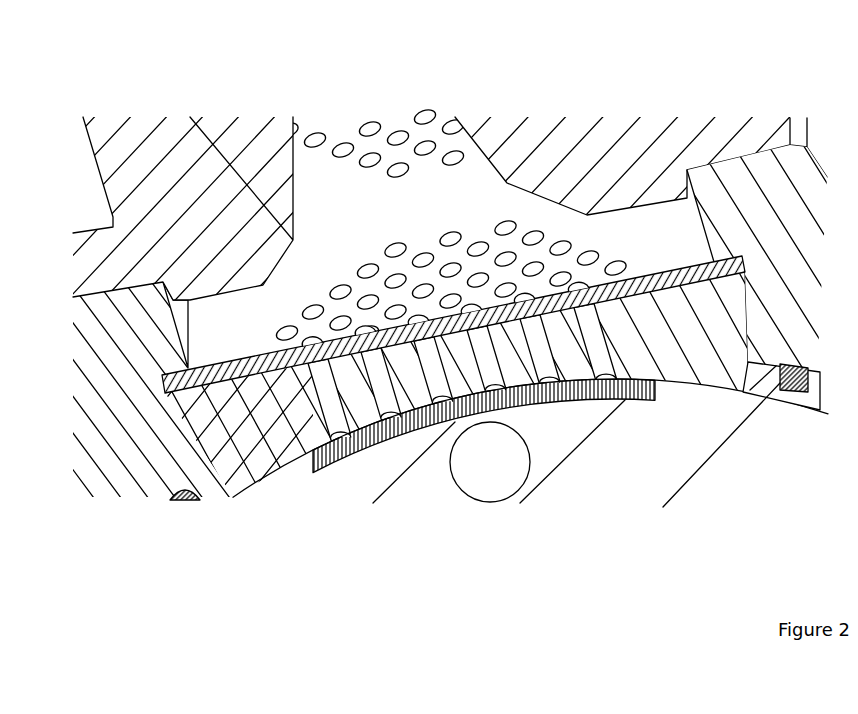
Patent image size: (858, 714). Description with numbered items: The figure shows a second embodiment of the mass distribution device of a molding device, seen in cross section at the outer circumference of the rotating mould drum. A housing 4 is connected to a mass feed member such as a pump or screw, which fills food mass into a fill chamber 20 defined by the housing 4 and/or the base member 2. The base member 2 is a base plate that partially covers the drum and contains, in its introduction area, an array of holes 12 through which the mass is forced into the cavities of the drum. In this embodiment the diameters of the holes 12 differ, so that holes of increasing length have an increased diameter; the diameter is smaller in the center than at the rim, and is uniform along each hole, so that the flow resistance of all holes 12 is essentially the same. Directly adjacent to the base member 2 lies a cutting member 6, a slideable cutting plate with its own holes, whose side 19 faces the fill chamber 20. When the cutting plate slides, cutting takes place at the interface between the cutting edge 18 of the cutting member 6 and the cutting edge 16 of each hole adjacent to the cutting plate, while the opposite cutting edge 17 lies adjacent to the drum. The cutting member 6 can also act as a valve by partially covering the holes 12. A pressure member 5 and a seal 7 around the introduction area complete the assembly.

The base member 2 is at (705, 172).
The housing 4 is at (500, 120).
The pressure member 5 is at (816, 392).
The cutting member 6 is at (343, 190).
The seal 7 is at (788, 362).
The hole in base-plate 12 is at (504, 372).
The cutting edge of the hole in the base member adjacent to the cutting plate 16 is at (325, 355).
The cutting edge of the hole in the base member adjacent to the drum 17 is at (360, 432).
The cutting edge at the cutting member 18 is at (233, 498).
The side of the cutting plate facing a fill chamber 19 is at (192, 488).
The fill chamber 20 is at (267, 143).